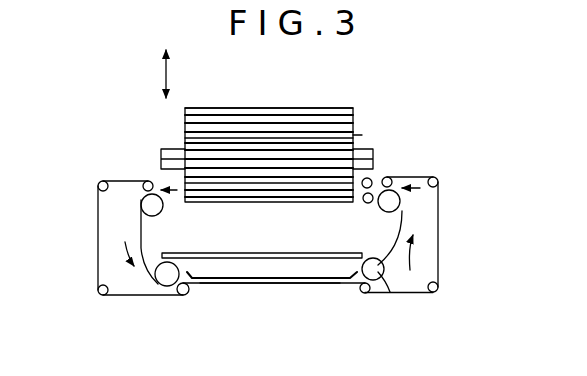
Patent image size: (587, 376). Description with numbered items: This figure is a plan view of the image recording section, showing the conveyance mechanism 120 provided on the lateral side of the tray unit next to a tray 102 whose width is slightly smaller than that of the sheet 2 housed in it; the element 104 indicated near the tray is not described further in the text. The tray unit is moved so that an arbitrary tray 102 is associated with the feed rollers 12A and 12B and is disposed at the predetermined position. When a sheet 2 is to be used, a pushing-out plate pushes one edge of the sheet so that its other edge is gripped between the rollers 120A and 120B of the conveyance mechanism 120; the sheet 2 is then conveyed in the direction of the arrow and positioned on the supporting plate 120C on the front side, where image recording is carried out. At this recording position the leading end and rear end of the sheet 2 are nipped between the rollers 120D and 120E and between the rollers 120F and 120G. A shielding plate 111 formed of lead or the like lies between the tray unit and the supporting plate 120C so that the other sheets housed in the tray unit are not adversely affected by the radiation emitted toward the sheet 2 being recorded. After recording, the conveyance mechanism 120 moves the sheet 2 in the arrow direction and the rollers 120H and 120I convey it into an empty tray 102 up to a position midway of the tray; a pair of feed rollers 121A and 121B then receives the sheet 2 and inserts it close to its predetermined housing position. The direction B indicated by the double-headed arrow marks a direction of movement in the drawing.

The sheet 2 is at (257, 285).
The feed roller 12A is at (375, 158).
The feed roller 12B is at (362, 150).
The tray 102 is at (354, 113).
The drum surface 104 is at (338, 105).
The shielding plate 111 is at (287, 258).
The conveyance mechanism 120 is at (121, 193).
The roller 120A is at (163, 215).
The roller 120B is at (148, 180).
The supporting plate 120C is at (313, 284).
The roller 120D is at (160, 285).
The roller 120E is at (190, 295).
The roller 120F is at (393, 292).
The roller 120G is at (365, 294).
The roller 120H is at (402, 212).
The roller 120I is at (389, 177).
The feed roller 121A is at (361, 184).
The feed roller 121B is at (366, 204).
The direction of movement B is at (170, 73).